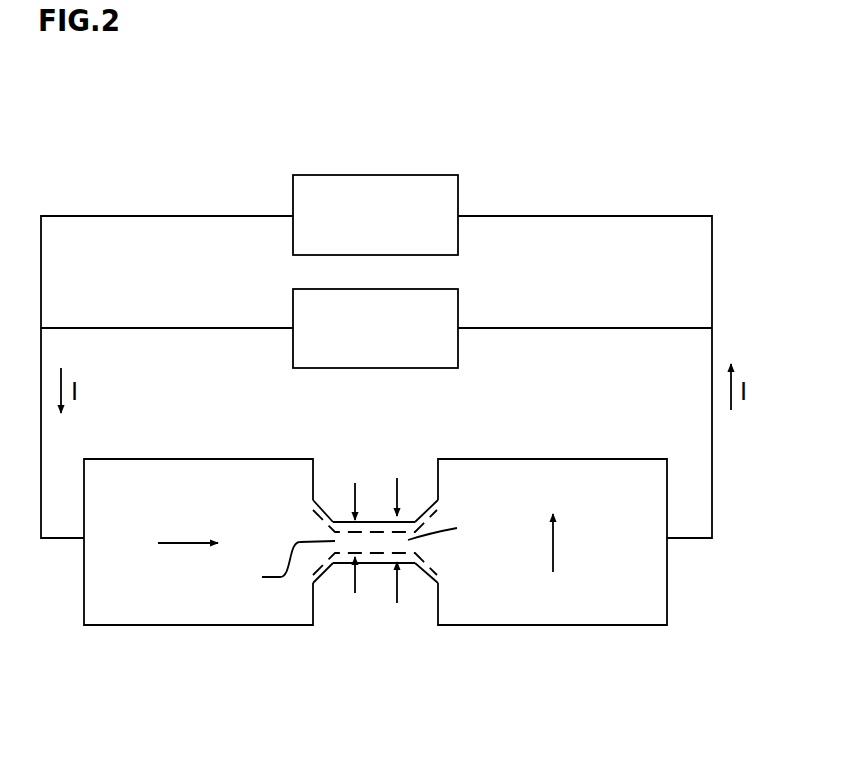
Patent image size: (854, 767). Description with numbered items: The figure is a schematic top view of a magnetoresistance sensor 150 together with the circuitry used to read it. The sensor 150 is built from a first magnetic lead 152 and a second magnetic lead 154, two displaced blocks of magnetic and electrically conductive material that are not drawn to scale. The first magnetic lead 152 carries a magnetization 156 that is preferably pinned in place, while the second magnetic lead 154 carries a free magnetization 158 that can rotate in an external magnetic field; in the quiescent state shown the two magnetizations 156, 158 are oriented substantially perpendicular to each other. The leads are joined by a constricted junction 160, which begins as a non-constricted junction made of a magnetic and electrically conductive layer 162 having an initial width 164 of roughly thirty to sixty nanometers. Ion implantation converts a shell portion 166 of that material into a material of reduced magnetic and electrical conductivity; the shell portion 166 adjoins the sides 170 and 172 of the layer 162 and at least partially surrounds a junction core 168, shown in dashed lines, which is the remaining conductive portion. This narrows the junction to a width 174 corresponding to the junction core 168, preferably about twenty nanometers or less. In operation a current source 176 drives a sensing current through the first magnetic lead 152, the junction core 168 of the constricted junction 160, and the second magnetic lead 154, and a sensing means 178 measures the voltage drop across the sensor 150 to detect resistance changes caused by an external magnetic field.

The magnetoresistance sensor 150 is at (552, 425).
The first magnetic lead 152 is at (105, 588).
The second magnetic lead 154 is at (625, 610).
The magnetization of first magnetic lead 156 is at (187, 543).
The free magnetization of second magnetic lead 158 is at (555, 555).
The constricted junction 160 is at (406, 453).
The magnetic and electrically conductive layer 162 is at (281, 564).
The initial width 164 is at (404, 594).
The shell portion 166 is at (378, 522).
The junction core 168 is at (450, 527).
The first side of the junction 170 is at (342, 522).
The second side of the junction 172 is at (412, 560).
The width of junction core 174 is at (356, 528).
The current source 176 is at (458, 303).
The sensing means 178 is at (418, 175).